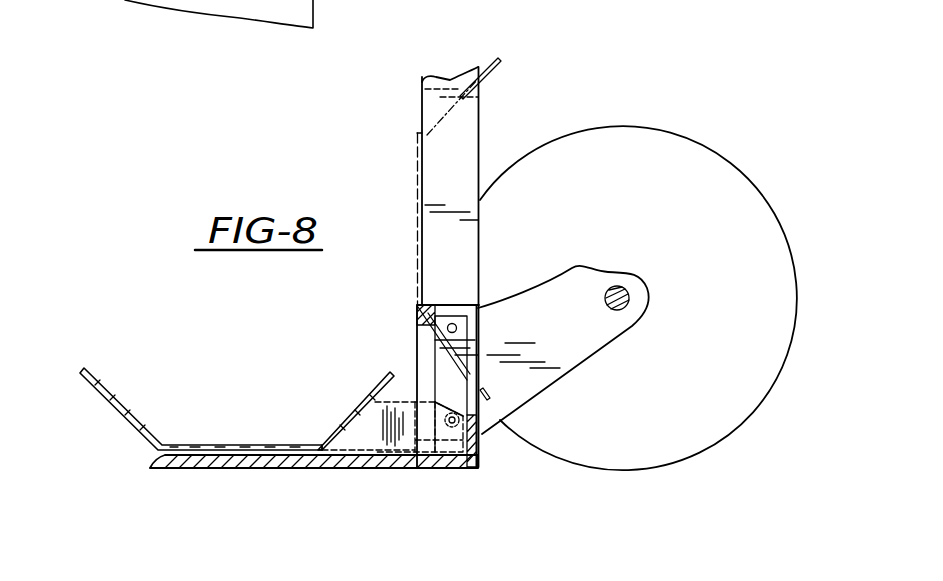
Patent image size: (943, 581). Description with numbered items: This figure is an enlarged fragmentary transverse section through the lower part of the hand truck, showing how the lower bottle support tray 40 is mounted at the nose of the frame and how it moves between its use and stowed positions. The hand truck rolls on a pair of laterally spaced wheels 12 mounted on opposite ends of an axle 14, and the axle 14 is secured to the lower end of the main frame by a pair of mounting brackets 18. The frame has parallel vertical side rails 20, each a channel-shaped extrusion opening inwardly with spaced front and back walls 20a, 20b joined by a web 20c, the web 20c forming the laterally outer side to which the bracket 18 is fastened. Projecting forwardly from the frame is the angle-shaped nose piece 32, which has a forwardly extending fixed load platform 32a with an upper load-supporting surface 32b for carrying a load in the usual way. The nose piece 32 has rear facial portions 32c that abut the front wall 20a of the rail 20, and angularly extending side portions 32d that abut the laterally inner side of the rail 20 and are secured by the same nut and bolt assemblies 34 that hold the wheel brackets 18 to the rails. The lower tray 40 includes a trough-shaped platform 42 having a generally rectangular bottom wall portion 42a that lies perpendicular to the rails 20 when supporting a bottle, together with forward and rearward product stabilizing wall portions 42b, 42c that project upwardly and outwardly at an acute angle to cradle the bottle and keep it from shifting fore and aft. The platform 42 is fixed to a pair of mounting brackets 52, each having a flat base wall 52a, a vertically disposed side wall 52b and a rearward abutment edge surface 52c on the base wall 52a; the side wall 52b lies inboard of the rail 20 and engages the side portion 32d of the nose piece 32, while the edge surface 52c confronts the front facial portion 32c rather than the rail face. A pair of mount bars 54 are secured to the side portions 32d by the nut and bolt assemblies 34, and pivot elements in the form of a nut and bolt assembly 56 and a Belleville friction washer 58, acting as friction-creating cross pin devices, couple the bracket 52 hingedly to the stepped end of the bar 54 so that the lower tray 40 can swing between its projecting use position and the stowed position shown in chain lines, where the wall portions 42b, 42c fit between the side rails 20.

The wheel 12 is at (688, 140).
The axle 14 is at (627, 289).
The mounting bracket 18 is at (590, 348).
The vertical side rail 20 is at (486, 134).
The front wall 20a is at (423, 102).
The back wall 20b is at (490, 100).
The web 20c is at (452, 82).
The nose piece 32 is at (158, 479).
The fixed load platform 32a is at (212, 472).
The upper load-supporting surface 32b is at (216, 450).
The rear facial portion 32c is at (415, 340).
The side portion 32d is at (416, 372).
The nut and bolt assembly 34 is at (456, 323).
The lower bottle support tray 40 is at (137, 386).
The platform 42 is at (144, 414).
The bottom wall portion 42a is at (268, 452).
The forward product stabilizing wall portion 42b is at (121, 415).
The rearward product stabilizing wall portion 42c is at (347, 470).
The mounting bracket 52 is at (434, 459).
The flat base wall 52a is at (273, 470).
The side wall 52b is at (398, 452).
The rearward abutment edge surface 52c is at (433, 458).
The mount bar 54 is at (420, 329).
The nut and bolt assembly 56 is at (483, 443).
The Belleville friction washer 58 is at (378, 400).